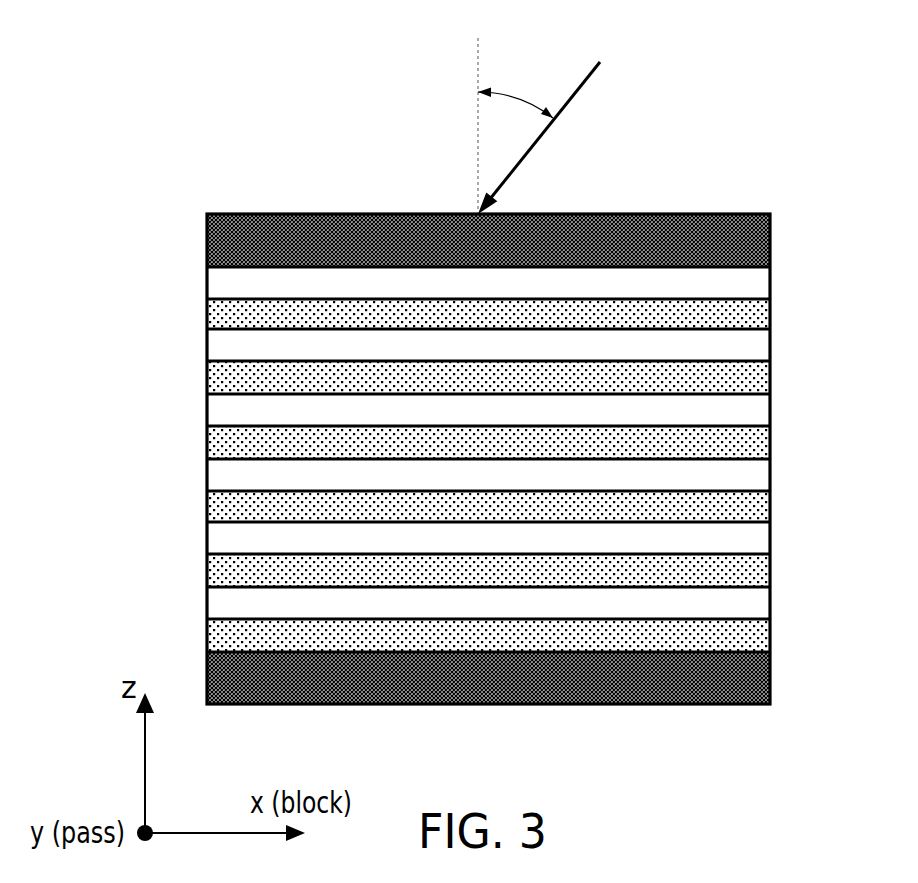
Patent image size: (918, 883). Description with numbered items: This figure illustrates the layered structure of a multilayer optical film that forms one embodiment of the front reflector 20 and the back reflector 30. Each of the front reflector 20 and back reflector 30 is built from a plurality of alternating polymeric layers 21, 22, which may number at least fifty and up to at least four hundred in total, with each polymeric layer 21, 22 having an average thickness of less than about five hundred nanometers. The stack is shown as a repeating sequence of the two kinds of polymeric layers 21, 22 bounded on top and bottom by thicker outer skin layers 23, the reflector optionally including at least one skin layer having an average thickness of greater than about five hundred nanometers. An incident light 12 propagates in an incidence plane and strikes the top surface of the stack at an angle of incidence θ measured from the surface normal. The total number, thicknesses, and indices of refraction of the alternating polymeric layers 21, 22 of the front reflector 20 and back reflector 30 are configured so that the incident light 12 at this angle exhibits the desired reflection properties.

The incident light 12 is at (577, 97).
The front reflector 20 is at (461, 389).
The back reflector 30 is at (475, 459).
The polymeric layer 21 is at (223, 283).
The polymeric layer 22 is at (228, 317).
The outer skin layers 23 is at (770, 243).